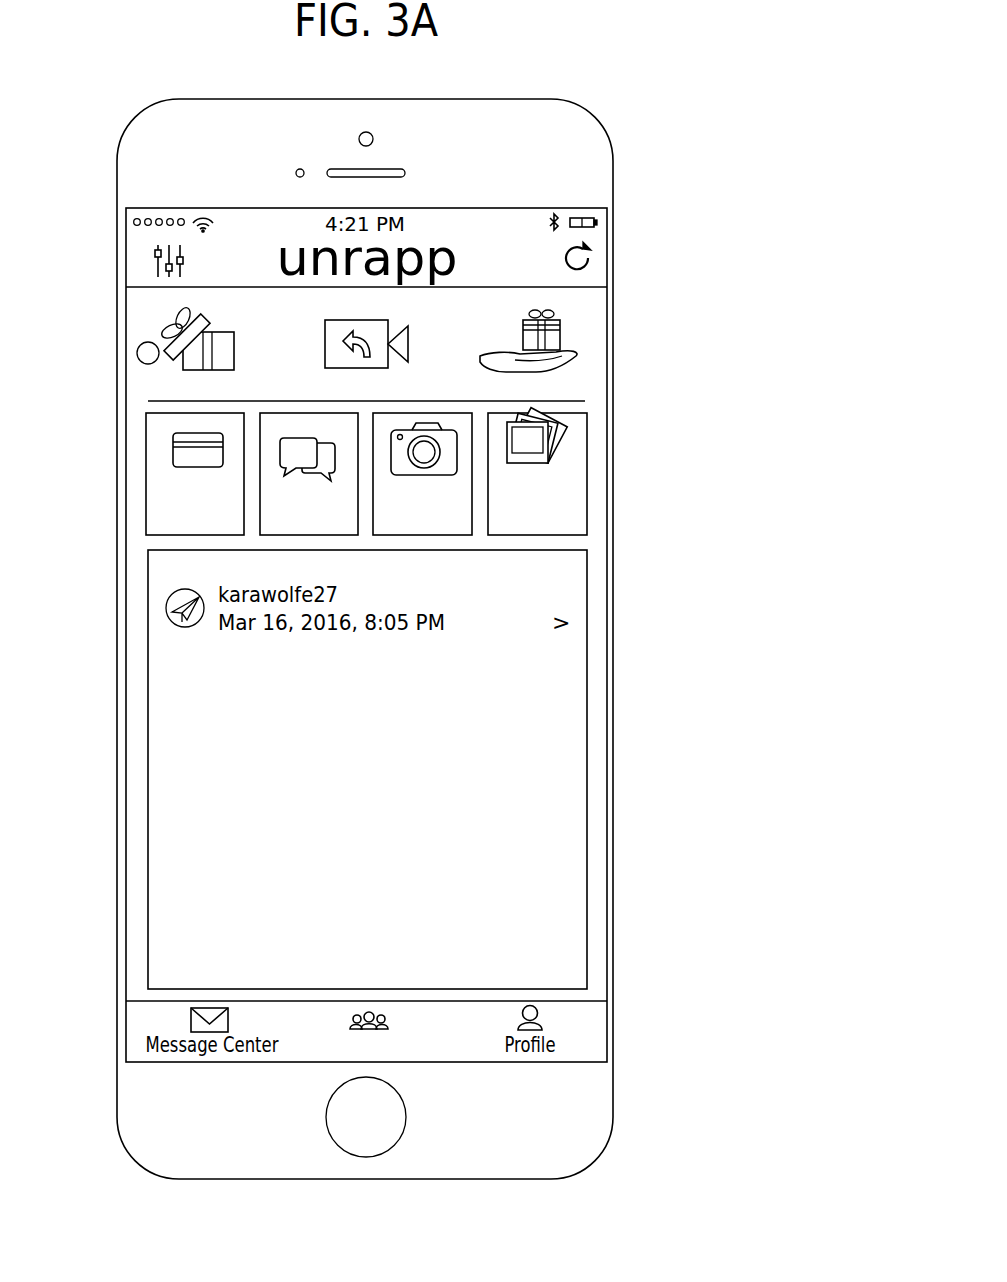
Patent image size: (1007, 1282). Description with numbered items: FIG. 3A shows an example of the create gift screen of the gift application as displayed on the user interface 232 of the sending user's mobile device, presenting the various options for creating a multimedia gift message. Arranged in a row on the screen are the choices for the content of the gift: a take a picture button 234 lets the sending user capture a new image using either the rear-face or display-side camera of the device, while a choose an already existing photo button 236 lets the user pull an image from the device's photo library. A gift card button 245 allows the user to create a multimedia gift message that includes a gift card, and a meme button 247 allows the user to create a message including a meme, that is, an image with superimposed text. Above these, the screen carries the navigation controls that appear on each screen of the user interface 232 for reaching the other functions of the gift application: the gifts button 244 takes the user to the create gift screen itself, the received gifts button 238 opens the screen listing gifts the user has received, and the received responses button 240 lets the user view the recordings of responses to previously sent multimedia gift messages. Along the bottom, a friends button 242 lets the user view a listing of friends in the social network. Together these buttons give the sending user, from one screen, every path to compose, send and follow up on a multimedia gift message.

The user interface 232 is at (609, 311).
The take a picture button 234 is at (423, 535).
The choose an already existing photo button 236 is at (587, 472).
The received gifts button 238 is at (143, 333).
The received responses button 240 is at (325, 321).
The friends button 242 is at (403, 1043).
The gifts button 244 is at (565, 342).
The gift card button 245 is at (146, 472).
The meme button 247 is at (310, 535).